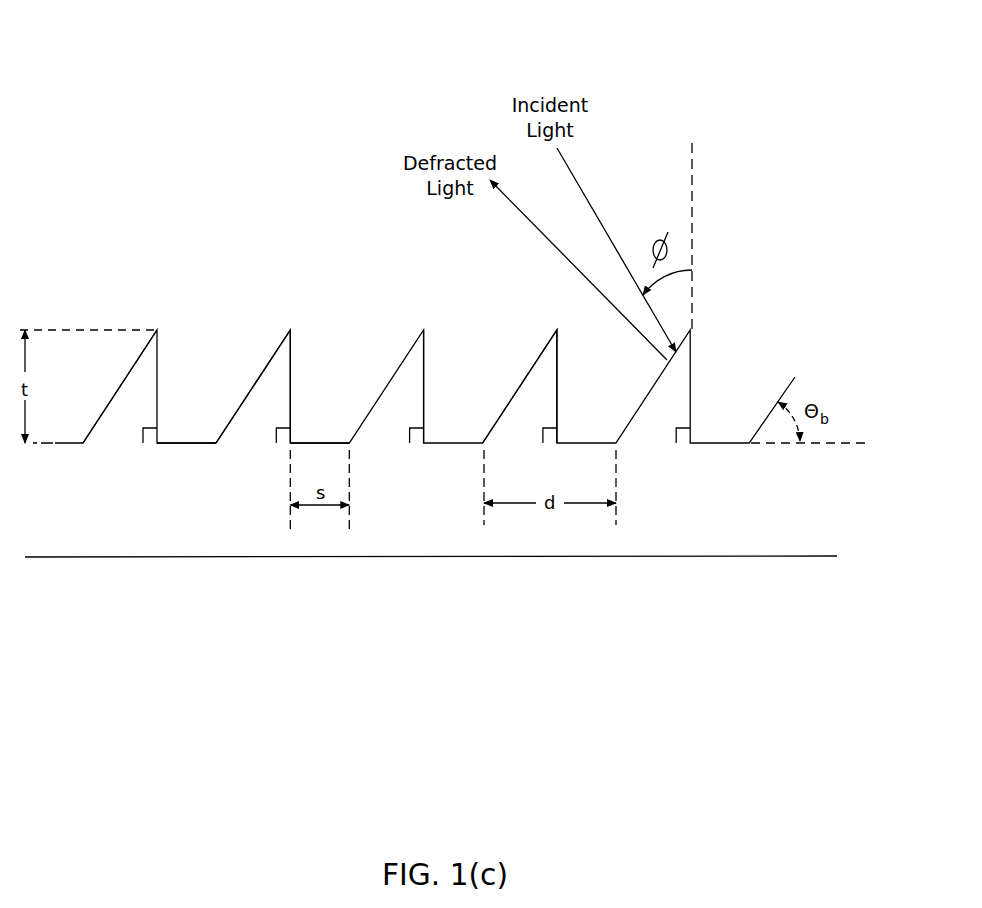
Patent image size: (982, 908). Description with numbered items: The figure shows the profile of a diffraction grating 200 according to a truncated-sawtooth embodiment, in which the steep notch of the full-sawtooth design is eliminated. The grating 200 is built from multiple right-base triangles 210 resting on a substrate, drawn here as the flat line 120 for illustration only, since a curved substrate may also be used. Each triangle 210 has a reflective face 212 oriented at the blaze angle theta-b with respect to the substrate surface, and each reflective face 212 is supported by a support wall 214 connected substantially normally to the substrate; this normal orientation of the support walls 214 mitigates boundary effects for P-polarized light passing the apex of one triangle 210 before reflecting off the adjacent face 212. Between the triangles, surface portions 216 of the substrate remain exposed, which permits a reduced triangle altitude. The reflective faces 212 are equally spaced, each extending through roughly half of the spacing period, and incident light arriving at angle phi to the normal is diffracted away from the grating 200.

The diffraction grating 200 is at (200, 113).
The right-base triangle 210 is at (534, 387).
The reflective face 212 is at (277, 344).
The support wall 214 is at (425, 352).
The surface portion of the substrate 216 is at (200, 443).
The substrate 120 is at (95, 520).